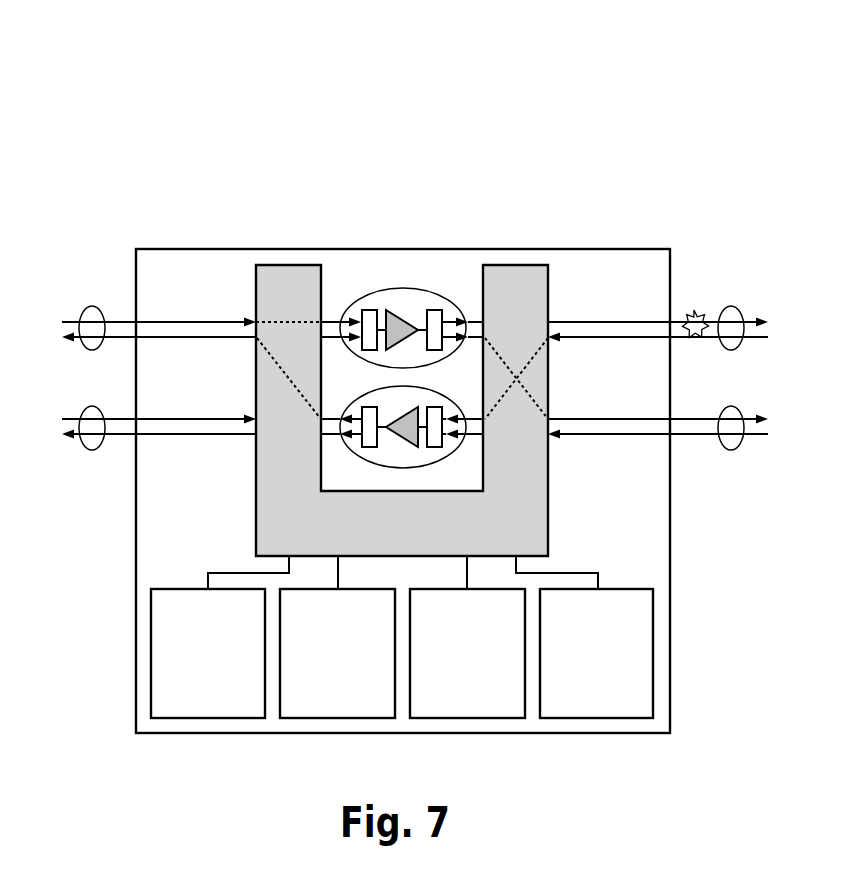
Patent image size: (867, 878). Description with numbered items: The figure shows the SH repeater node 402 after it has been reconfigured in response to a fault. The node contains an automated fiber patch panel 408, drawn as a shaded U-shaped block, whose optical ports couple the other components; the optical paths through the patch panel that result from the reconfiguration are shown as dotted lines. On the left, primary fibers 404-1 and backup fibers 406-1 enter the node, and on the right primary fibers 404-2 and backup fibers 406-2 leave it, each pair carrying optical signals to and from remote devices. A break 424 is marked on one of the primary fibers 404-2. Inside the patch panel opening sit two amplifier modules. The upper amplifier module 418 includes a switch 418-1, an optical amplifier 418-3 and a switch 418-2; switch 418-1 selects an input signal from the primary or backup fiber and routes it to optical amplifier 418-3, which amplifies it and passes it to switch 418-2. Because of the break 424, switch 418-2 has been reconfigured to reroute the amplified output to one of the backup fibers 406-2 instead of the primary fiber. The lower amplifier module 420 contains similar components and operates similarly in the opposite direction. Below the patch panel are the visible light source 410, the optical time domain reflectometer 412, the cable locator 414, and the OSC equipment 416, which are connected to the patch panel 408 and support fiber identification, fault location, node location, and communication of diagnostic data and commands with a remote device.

The SH repeater node 402 is at (395, 78).
The primary fibers 404-1 is at (92, 306).
The primary fibers 404-2 is at (731, 306).
The backup fibers 406-1 is at (92, 450).
The backup fibers 406-2 is at (731, 450).
The automated fiber patch panel 408 is at (268, 265).
The visible light source 410 is at (208, 653).
The optical time domain reflectometer (OTDR) 412 is at (337, 653).
The cable locator 414 is at (467, 653).
The optical service channel (OSC) equipment 416 is at (596, 653).
The amplifier module 418 is at (404, 275).
The switch 418-1 is at (366, 310).
The switch 418-2 is at (433, 310).
The optical amplifier 418-3 is at (393, 312).
The amplifier module 420 is at (458, 415).
The break 424 is at (694, 309).